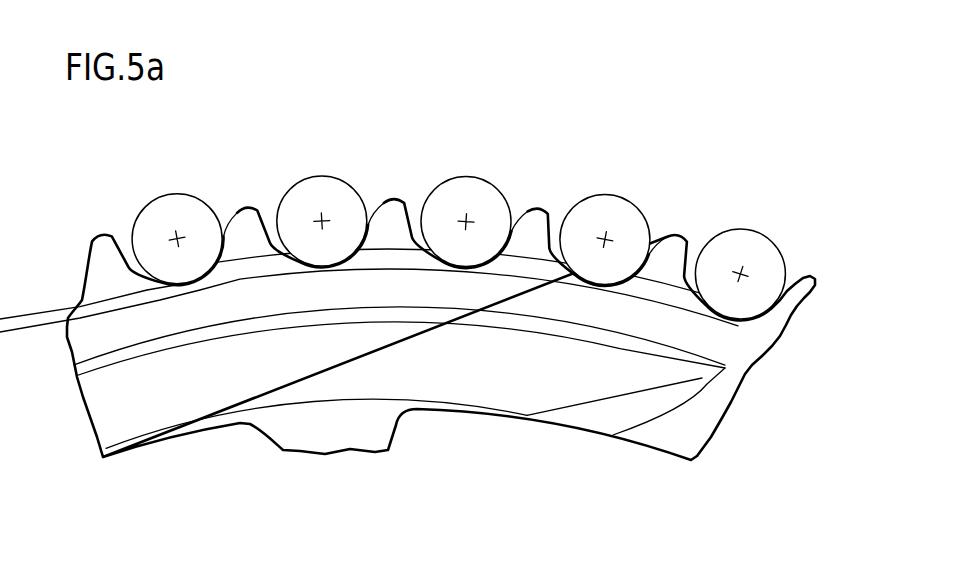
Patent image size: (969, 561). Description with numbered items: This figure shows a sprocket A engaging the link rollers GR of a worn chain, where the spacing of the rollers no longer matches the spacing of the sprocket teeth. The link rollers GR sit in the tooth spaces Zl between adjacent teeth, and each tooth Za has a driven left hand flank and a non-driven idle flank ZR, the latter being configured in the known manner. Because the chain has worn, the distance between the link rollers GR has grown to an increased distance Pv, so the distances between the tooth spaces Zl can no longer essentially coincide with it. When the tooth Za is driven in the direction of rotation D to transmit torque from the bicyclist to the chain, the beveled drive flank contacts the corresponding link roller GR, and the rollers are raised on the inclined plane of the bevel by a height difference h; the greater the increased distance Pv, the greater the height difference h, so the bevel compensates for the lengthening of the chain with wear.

The increased distance Pv is at (323, 228).
The link roller GR is at (340, 205).
The tooth space Zl is at (153, 218).
The idle flank ZR is at (261, 212).
The tooth Za is at (670, 237).
The height difference h is at (36, 376).
The sprocket A is at (510, 375).
The direction of rotation D is at (418, 477).